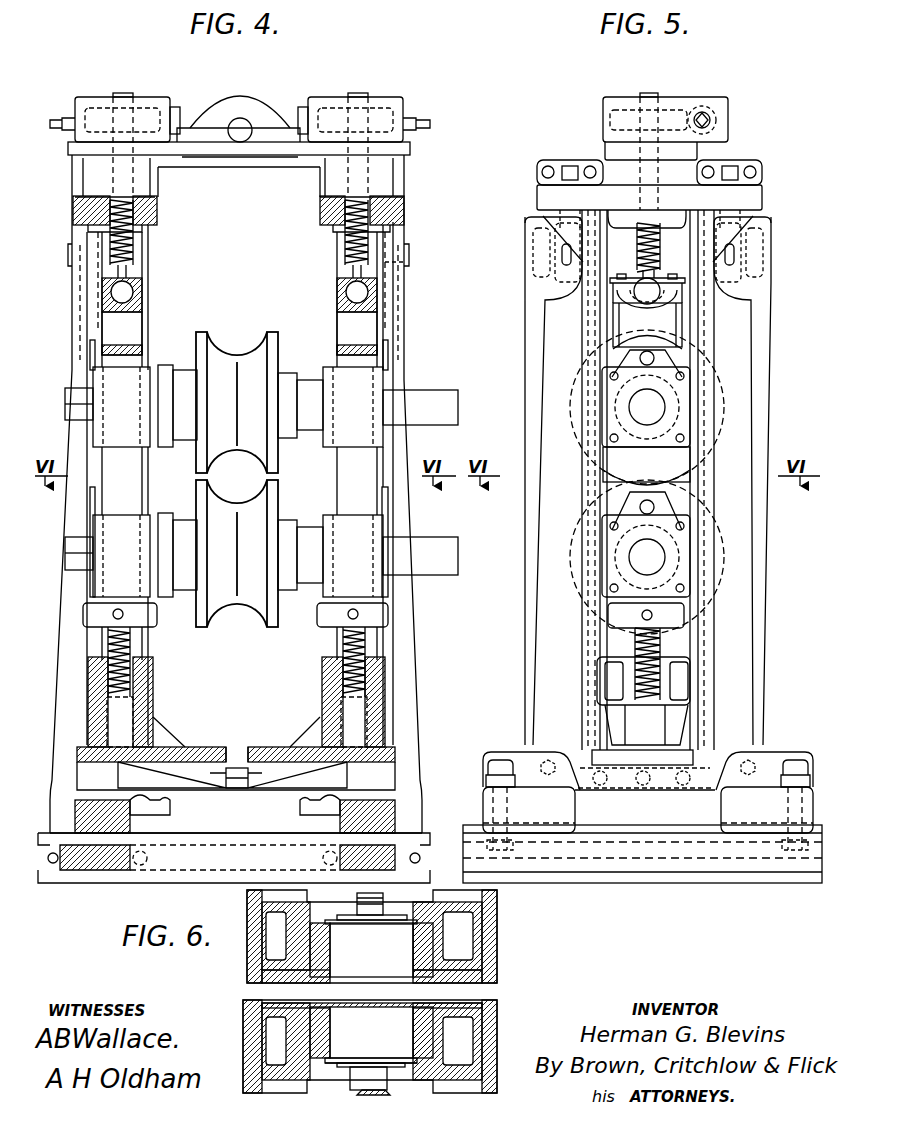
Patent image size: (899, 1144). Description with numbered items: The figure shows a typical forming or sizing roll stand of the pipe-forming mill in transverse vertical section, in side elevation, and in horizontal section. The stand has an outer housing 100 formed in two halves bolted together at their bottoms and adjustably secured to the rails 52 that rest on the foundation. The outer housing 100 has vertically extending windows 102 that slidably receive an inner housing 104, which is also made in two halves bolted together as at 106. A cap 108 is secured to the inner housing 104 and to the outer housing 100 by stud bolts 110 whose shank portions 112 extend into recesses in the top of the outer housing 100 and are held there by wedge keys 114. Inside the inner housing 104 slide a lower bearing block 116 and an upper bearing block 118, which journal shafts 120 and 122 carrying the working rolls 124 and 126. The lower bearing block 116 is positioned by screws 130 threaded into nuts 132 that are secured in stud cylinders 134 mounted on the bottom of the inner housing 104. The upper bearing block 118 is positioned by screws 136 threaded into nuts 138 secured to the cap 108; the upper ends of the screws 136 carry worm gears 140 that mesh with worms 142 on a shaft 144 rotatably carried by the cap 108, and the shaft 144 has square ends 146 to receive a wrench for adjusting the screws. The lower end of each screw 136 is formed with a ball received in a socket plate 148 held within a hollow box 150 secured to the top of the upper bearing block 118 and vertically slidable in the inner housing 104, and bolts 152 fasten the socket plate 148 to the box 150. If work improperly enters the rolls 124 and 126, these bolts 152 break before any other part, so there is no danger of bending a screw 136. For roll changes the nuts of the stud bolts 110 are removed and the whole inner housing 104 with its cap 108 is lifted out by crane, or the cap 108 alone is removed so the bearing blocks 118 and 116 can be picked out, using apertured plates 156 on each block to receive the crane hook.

In FIG. 4, the rails 52 is at (300, 850).
In FIG. 5, the rails 52 is at (472, 835).
In FIG. 4, the outer housing 100 is at (404, 159).
In FIG. 5, the outer housing 100 is at (648, 480).
In FIG. 6, the outer housing 100 is at (480, 941).
In FIG. 4, the windows 102 is at (320, 636).
In FIG. 4, the inner housing 104 is at (247, 747).
In FIG. 5, the inner housing 104 is at (598, 637).
In FIG. 6, the inner housing 104 is at (427, 942).
In FIG. 4, the bolts 106 is at (248, 780).
In FIG. 5, the bolts 106 is at (632, 790).
In FIG. 4, the cap 108 is at (402, 196).
In FIG. 5, the cap 108 is at (540, 196).
In FIG. 5, the stud bolts 110 is at (572, 165).
In FIG. 4, the shank portions 112 is at (404, 269).
In FIG. 5, the shank portions 112 is at (528, 264).
In FIG. 4, the wedge keys 114 is at (410, 250).
In FIG. 5, the wedge keys 114 is at (564, 252).
In FIG. 4, the lower bearing block 116 is at (378, 586).
In FIG. 5, the lower bearing block 116 is at (605, 578).
In FIG. 6, the lower bearing block 116 is at (407, 958).
In FIG. 4, the upper bearing block 118 is at (378, 442).
In FIG. 5, the upper bearing block 118 is at (608, 425).
In FIG. 4, the shaft 120 is at (446, 546).
In FIG. 5, the shaft 120 is at (634, 551).
In FIG. 6, the shaft 120 is at (378, 1073).
In FIG. 4, the shaft 122 is at (455, 397).
In FIG. 5, the shaft 122 is at (634, 402).
In FIG. 4, the working roll 124 is at (274, 508).
In FIG. 5, the working roll 124 is at (680, 499).
In FIG. 4, the working roll 126 is at (275, 347).
In FIG. 5, the working roll 126 is at (680, 465).
In FIG. 4, the screws 130 is at (343, 660).
In FIG. 5, the screws 130 is at (660, 652).
In FIG. 4, the nuts 132 is at (343, 672).
In FIG. 4, the stud cylinders 134 is at (340, 699).
In FIG. 4, the screws 136 is at (345, 238).
In FIG. 5, the screws 136 is at (665, 236).
In FIG. 4, the nuts 138 is at (322, 216).
In FIG. 4, the worm gears 140 is at (380, 112).
In FIG. 5, the worm gears 140 is at (665, 110).
In FIG. 5, the worms 142 is at (712, 113).
In FIG. 4, the shaft 144 is at (286, 120).
In FIG. 4, the square ends 146 is at (424, 118).
In FIG. 4, the socket plate 148 is at (378, 301).
In FIG. 5, the socket plate 148 is at (622, 306).
In FIG. 4, the hollow box 150 is at (378, 324).
In FIG. 5, the hollow box 150 is at (612, 327).
In FIG. 5, the bolts 152 is at (626, 278).
In FIG. 4, the apertured plates 156 is at (388, 350).
In FIG. 5, the apertured plates 156 is at (604, 353).
In FIG. 6, the apertured plates 156 is at (340, 1066).